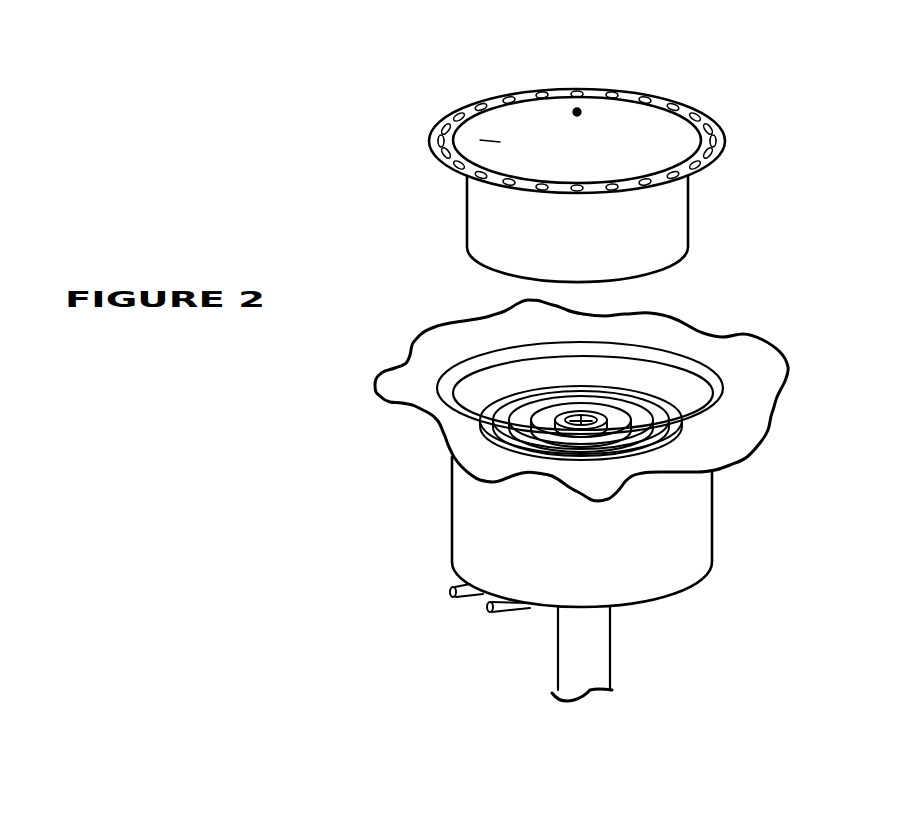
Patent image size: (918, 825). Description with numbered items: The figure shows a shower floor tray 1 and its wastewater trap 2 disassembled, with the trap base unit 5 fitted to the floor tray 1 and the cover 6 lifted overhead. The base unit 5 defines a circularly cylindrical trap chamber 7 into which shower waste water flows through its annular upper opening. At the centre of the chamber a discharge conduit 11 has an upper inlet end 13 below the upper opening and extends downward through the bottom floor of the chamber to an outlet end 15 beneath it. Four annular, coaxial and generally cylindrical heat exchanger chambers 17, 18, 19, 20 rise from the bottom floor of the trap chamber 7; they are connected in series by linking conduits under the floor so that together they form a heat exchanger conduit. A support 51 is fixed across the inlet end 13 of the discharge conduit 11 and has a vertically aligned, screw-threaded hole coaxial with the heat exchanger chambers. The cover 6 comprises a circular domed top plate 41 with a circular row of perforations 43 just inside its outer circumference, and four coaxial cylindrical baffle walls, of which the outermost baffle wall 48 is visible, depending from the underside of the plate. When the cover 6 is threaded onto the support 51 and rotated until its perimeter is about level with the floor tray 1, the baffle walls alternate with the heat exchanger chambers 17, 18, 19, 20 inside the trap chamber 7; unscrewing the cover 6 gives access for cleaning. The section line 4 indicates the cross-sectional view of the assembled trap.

The floor tray 1 is at (417, 405).
The wastewater trap 2 is at (396, 219).
The section line 4 is at (403, 572).
The trap base unit 5 is at (690, 558).
The cover 6 is at (562, 174).
The trap chamber 7 is at (470, 400).
The discharge conduit 11 is at (602, 647).
The upper inlet end 13 is at (560, 407).
The outlet end 15 is at (587, 697).
The heat exchanger chamber 17 is at (606, 415).
The heat exchanger chamber 18 is at (630, 410).
The heat exchanger chamber 19 is at (657, 418).
The heat exchanger chamber 20 is at (680, 420).
The domed top plate 41 is at (490, 140).
The perforations 43 is at (704, 111).
The baffle wall 48 is at (680, 222).
The support 51 is at (577, 417).